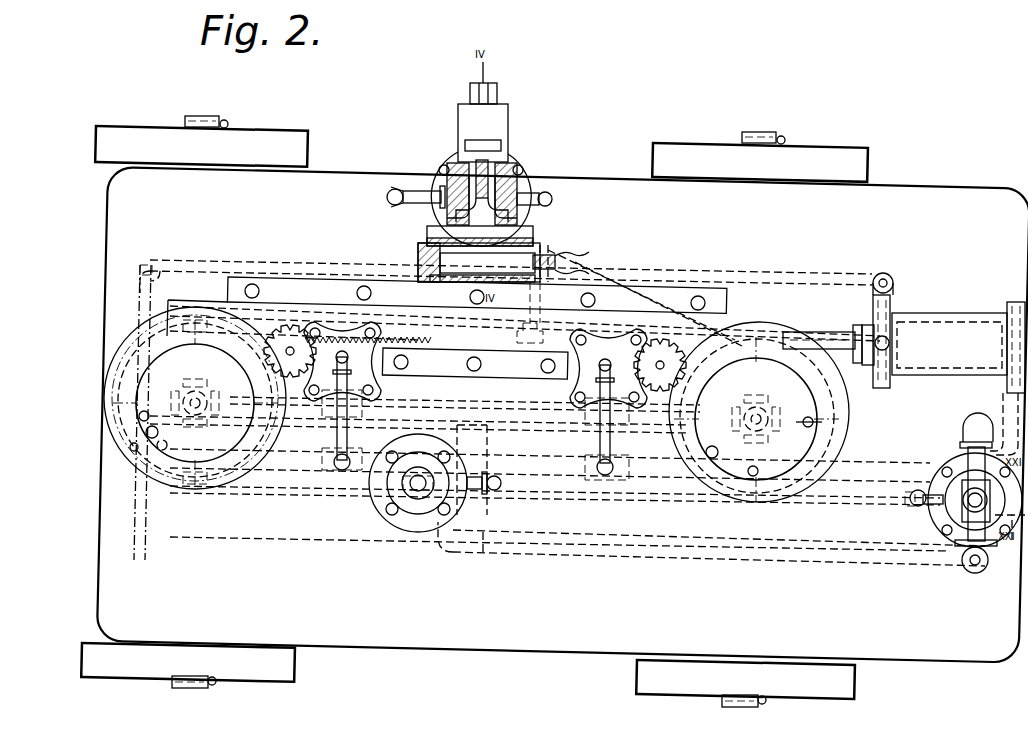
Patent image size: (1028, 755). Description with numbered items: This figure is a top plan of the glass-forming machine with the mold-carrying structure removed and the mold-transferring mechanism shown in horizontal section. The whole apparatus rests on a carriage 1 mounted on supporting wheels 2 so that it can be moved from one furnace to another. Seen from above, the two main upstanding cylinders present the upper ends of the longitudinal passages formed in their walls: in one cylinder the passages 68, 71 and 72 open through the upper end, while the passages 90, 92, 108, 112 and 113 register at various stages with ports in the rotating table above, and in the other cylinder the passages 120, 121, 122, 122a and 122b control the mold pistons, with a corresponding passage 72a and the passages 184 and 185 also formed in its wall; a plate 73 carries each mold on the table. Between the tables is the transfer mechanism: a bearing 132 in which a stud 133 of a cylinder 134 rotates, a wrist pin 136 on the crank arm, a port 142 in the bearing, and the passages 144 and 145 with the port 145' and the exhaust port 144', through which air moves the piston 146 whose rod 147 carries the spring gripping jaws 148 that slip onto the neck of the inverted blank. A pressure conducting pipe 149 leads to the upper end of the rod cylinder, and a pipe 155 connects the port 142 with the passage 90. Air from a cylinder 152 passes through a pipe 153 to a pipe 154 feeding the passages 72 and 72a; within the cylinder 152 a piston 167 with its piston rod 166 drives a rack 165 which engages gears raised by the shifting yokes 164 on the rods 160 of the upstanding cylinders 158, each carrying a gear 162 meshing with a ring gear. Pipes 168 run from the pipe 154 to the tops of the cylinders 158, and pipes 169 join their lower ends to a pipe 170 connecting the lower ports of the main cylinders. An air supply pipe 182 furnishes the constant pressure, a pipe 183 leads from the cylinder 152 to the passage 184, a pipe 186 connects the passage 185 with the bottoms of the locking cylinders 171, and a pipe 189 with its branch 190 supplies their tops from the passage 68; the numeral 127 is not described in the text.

The carriage 1 is at (967, 653).
The supporting wheels 2 is at (846, 686).
The passage 68 is at (706, 450).
The passage 71 is at (815, 421).
The passage 72 is at (757, 478).
The passage 72a is at (170, 500).
The plate 73 is at (650, 425).
The longitudinal passage 90 is at (792, 332).
The passage 92 is at (810, 510).
The longitudinal passage 108 is at (845, 508).
The longitudinal passage 112 is at (838, 388).
The passage 113 is at (830, 472).
The longitudinal passage 120 is at (420, 431).
The passage 121 is at (465, 406).
The passage 122 is at (135, 320).
The passage 122a is at (135, 372).
The passage 122b is at (132, 480).
The pipe 127 is at (146, 434).
The bearing 132 is at (518, 180).
The stud 133 is at (495, 175).
The cylinder 134 is at (447, 310).
The wrist pin 136 is at (488, 77).
The port 142 is at (445, 185).
The passage 144 is at (436, 139).
The exhaust port 144' is at (566, 162).
The passage 145 is at (558, 206).
The port 145' is at (554, 188).
The piston 146 is at (428, 250).
The rod 147 is at (520, 262).
The spring gripping jaws 148 is at (585, 257).
The pressure conducting pipe 149 is at (548, 312).
The cylinder 152 is at (942, 320).
The pipe 153 is at (1000, 402).
The pipe 154 is at (965, 570).
The pipe 155 is at (395, 205).
The upstanding cylinders 158 is at (475, 365).
The rod 160 is at (690, 282).
The gear 162 is at (290, 351).
The shifting yoke 164 is at (660, 365).
The rack 165 is at (328, 334).
The piston rod 166 is at (850, 318).
The piston 167 is at (949, 345).
The pipes 168 is at (348, 445).
The pipes 169 is at (330, 412).
The pipe 170 is at (437, 376).
The cylinder 171 is at (410, 510).
The air supply pipe 182 is at (986, 545).
The pipe 183 is at (205, 262).
The passage 184 is at (139, 416).
The passage 185 is at (132, 449).
The pipe 186 is at (295, 488).
The pipe 189 is at (602, 492).
The branch 190 is at (675, 492).